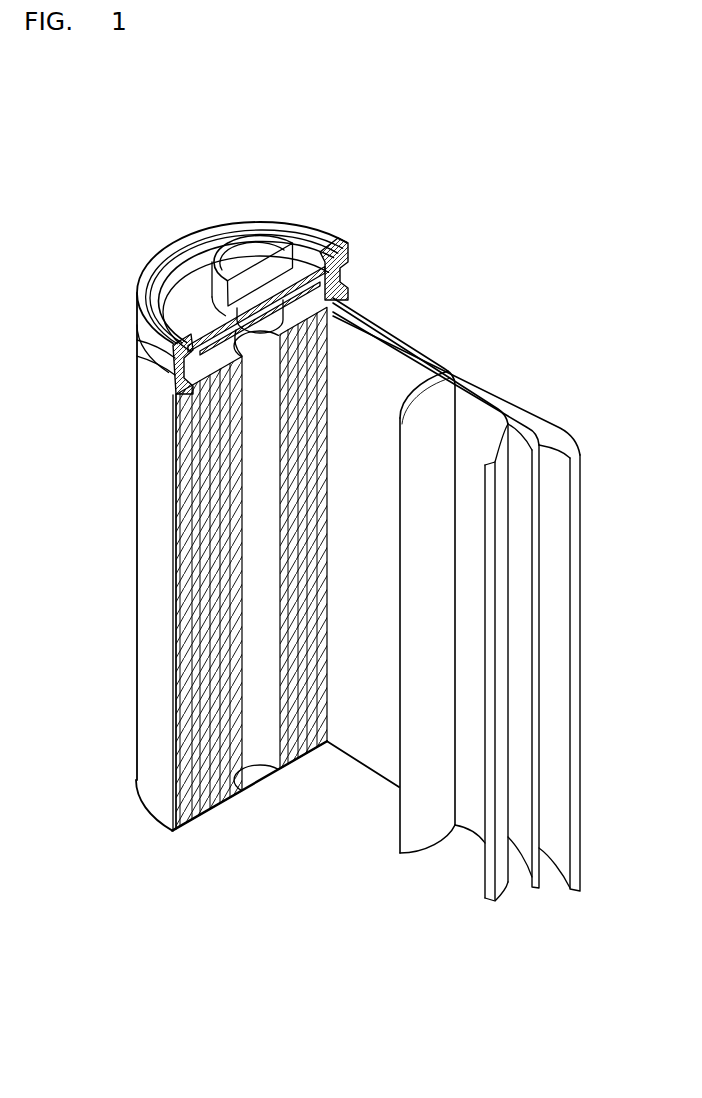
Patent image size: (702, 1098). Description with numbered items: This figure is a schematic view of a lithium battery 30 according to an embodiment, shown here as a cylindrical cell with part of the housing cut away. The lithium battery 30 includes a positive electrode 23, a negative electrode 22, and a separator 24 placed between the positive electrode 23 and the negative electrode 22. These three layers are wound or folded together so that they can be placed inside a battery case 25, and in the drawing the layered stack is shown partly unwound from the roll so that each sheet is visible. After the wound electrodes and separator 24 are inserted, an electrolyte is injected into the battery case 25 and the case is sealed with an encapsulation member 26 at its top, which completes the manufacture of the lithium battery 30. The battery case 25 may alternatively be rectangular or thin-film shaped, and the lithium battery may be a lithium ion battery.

The lithium battery 30 is at (242, 272).
The encapsulation member 26 is at (250, 258).
The battery case 25 is at (148, 569).
The positive electrode 23 is at (471, 396).
The separator 24 is at (517, 410).
The negative electrode 22 is at (566, 430).